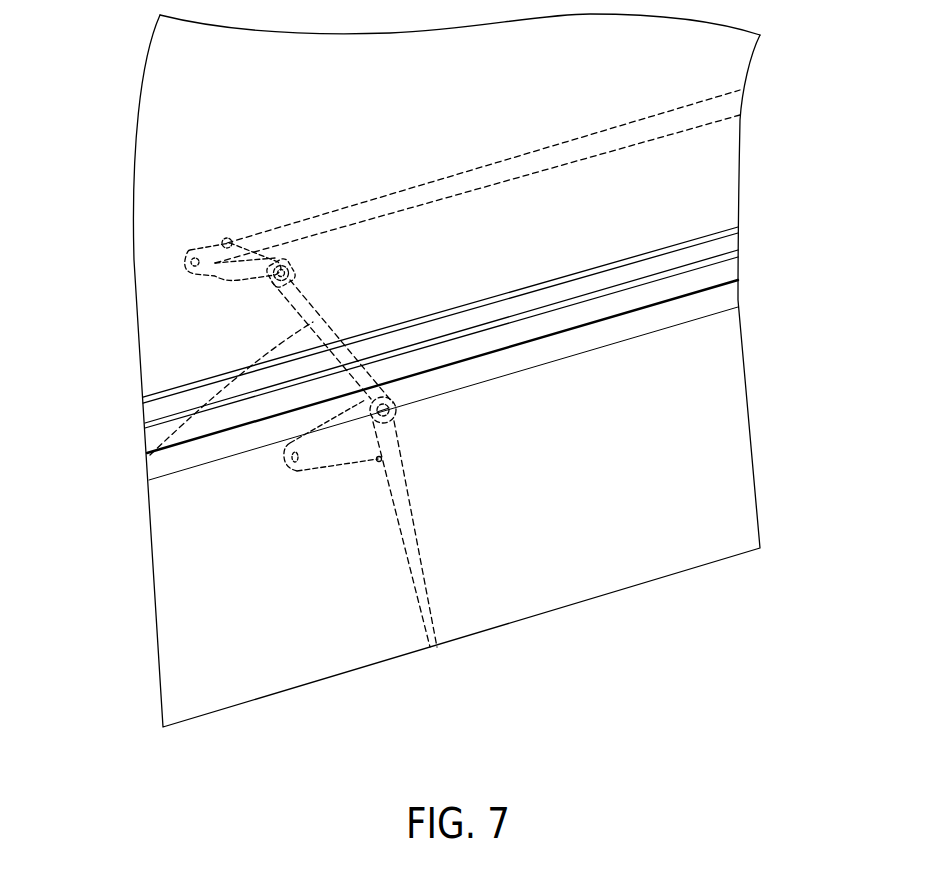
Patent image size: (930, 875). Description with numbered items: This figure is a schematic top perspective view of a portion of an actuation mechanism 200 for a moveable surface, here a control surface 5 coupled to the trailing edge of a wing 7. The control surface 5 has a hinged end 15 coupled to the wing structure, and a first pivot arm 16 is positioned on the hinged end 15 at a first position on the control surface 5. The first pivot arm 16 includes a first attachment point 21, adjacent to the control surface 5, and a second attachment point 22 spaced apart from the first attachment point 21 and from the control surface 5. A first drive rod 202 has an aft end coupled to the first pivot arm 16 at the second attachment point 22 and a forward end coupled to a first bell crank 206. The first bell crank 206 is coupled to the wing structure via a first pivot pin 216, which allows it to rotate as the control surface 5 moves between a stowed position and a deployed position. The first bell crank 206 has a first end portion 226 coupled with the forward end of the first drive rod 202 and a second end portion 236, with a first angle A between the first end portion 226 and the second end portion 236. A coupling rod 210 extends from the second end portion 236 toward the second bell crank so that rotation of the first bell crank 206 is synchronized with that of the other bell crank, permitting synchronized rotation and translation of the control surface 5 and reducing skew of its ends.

The control surface 5 is at (710, 495).
The wing 7 is at (163, 143).
The hinged end 15 is at (552, 352).
The first pivot arm 16 is at (406, 497).
The first attachment point 21 is at (277, 477).
The second attachment point 22 is at (420, 417).
The actuation mechanism 200 is at (123, 340).
The first drive rod 202 is at (148, 455).
The first bell crank 206 is at (216, 243).
The coupling rod 210 is at (700, 113).
The first pivot pin 216 is at (229, 238).
The first end portion 226 is at (304, 270).
The second end portion 236 is at (197, 290).
The first angle A is at (236, 283).